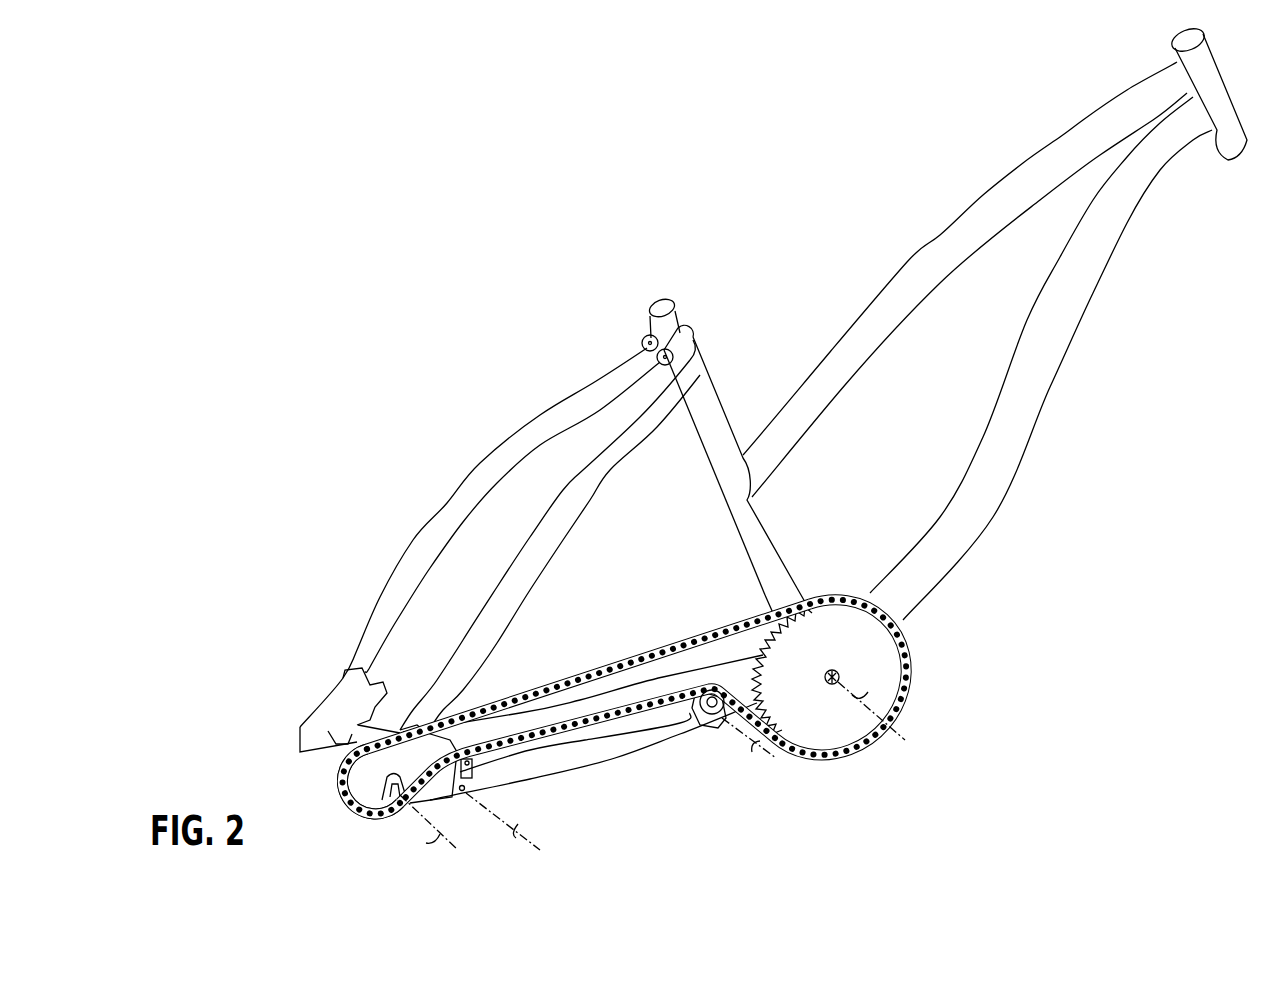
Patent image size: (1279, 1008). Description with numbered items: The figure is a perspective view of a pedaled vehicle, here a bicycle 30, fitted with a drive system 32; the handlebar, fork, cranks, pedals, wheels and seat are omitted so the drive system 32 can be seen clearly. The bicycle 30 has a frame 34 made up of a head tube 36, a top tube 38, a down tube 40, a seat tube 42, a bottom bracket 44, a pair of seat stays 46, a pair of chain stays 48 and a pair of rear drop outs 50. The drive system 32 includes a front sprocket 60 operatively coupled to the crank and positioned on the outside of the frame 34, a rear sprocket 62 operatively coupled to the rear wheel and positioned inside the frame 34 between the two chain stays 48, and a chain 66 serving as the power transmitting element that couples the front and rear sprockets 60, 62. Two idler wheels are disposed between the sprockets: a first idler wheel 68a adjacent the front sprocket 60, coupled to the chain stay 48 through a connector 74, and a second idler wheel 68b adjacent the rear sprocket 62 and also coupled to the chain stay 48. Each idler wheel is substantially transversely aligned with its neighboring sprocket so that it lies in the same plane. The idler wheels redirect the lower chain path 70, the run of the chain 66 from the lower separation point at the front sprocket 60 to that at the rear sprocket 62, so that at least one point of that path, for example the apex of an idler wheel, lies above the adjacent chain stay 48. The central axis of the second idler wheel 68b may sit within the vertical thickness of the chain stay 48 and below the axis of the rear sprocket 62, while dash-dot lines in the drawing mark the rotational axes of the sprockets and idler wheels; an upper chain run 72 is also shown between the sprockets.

The bicycle 30 is at (470, 282).
The drive system 32 is at (889, 764).
The frame 34 is at (1022, 165).
The head tube 36 is at (1232, 94).
The top tube 38 is at (930, 245).
The down tube 40 is at (1026, 322).
The seat tube 42 is at (783, 544).
The bottom bracket 44 is at (744, 628).
The seat stays 46 is at (594, 386).
The chain stays 48 is at (667, 676).
The rear drop outs 50 is at (331, 704).
The front sprocket 60 is at (842, 651).
The rear sprocket 62 is at (348, 762).
The chain 66 is at (631, 657).
The first idler wheel 68a is at (684, 718).
The second idler wheel 68b is at (466, 757).
The lower chain path 70 is at (585, 734).
The upper chain span 72 is at (594, 672).
The connector 74 is at (712, 708).